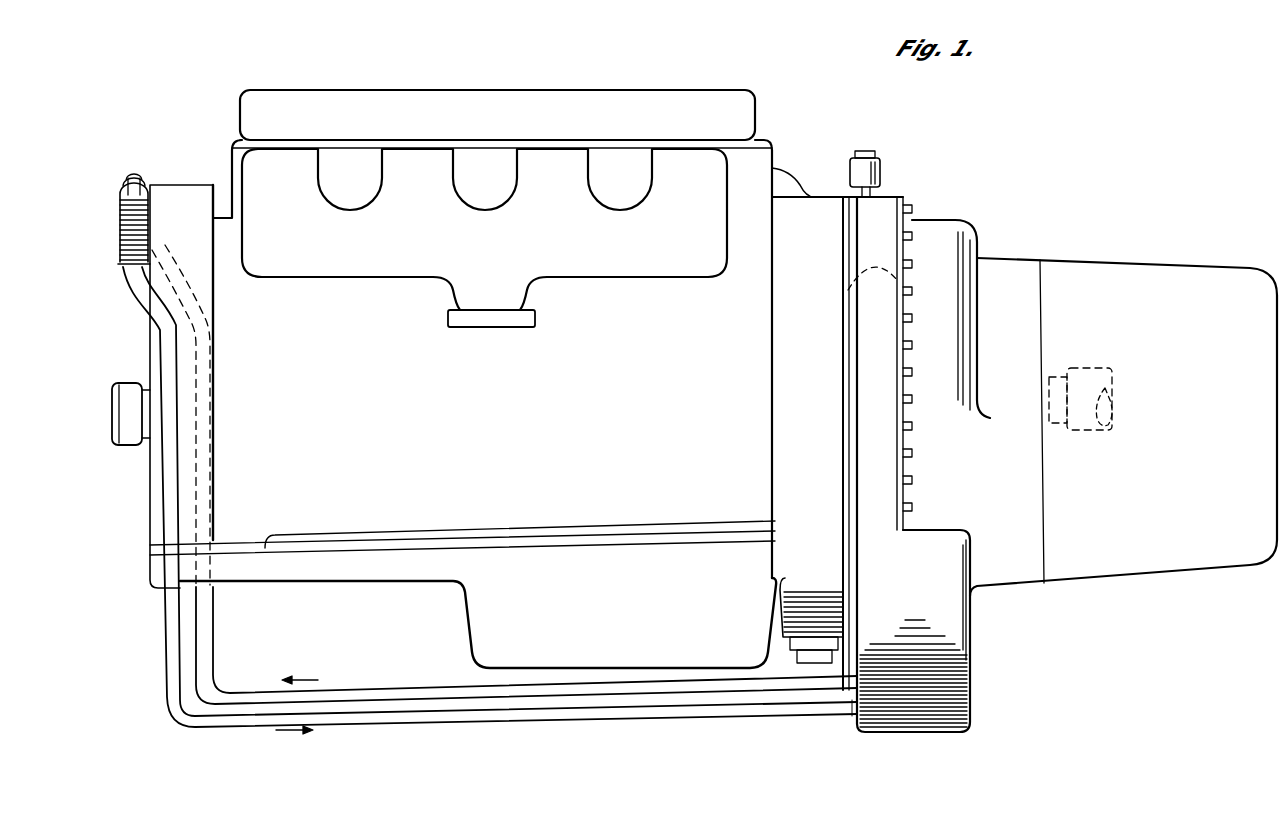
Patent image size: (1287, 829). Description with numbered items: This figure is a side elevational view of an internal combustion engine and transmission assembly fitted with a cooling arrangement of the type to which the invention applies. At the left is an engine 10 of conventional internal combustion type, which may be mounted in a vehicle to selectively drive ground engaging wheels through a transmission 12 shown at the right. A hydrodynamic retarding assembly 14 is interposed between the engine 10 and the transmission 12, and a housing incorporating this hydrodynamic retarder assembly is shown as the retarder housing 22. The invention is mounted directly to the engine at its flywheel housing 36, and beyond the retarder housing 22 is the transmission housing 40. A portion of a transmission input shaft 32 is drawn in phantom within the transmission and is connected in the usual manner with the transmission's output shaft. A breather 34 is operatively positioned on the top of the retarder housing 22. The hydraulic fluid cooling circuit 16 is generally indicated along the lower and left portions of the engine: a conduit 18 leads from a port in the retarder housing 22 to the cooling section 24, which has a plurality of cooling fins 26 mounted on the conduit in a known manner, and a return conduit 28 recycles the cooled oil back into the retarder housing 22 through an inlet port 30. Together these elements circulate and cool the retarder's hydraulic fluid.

The engine 10 is at (573, 88).
The transmission 12 is at (1138, 268).
The hydrodynamic retarding assembly 14 is at (848, 197).
The hydraulic fluid cooling circuit 16 is at (222, 666).
The conduit 18 is at (291, 688).
The retarder housing 22 is at (920, 588).
The cooling section 24 is at (116, 224).
The cooling fins 26 is at (122, 265).
The return conduit 28 is at (172, 690).
The inlet port 30 is at (853, 718).
The transmission input shaft 32 is at (1113, 396).
The breather 34 is at (881, 168).
The flywheel housing 36 is at (822, 437).
The transmission housing 40 is at (958, 220).